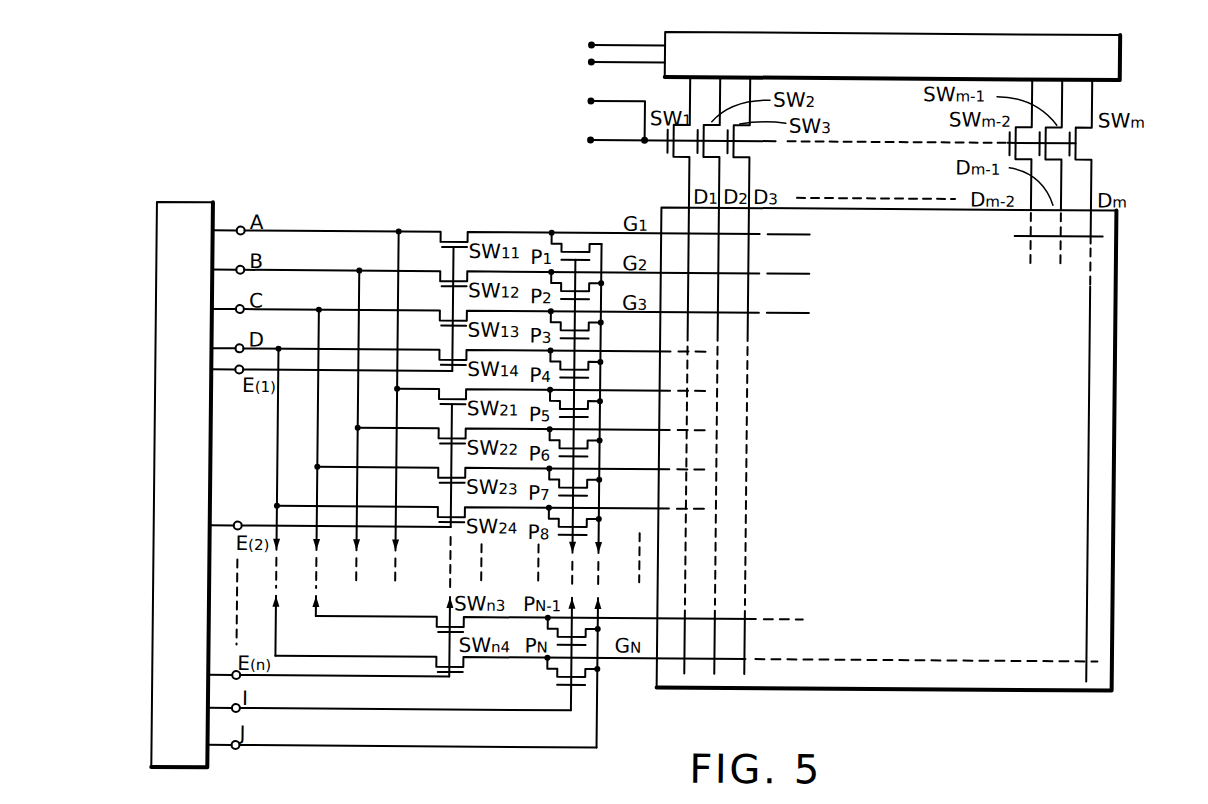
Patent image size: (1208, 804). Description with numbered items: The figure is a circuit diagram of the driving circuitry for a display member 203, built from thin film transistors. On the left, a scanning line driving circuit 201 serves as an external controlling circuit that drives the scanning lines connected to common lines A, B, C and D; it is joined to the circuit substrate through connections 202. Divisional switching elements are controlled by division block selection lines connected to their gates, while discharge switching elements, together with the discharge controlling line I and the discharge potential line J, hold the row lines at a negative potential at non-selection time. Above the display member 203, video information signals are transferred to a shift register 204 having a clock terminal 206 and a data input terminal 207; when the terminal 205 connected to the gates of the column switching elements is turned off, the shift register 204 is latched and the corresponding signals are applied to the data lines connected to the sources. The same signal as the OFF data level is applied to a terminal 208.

The scanning line driving circuit 201 is at (183, 205).
The connections 202 is at (242, 228).
The display member 203 is at (994, 648).
The shift register 204 is at (1117, 54).
The terminal 205 is at (584, 140).
The clock terminal 206 is at (584, 46).
The data input terminal 207 is at (584, 62).
The terminal 208 is at (584, 101).